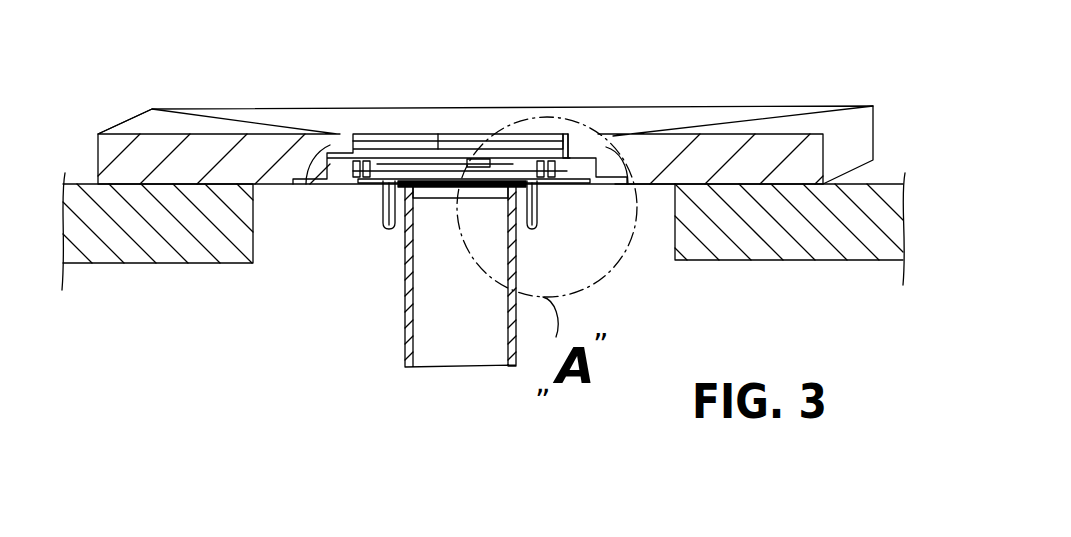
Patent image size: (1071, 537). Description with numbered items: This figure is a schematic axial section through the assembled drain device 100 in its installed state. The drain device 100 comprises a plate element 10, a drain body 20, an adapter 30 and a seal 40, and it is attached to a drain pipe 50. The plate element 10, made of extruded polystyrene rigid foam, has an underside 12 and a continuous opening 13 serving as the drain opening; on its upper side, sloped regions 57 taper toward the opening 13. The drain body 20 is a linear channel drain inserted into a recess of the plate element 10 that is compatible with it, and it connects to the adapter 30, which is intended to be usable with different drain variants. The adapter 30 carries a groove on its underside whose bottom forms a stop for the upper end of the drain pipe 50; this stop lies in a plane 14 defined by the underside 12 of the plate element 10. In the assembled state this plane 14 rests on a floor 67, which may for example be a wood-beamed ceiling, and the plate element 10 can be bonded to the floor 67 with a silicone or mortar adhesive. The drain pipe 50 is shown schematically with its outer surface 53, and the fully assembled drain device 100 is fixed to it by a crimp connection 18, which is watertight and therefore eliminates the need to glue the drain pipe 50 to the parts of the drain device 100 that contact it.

The drain device 100 is at (668, 94).
The plate element 10 is at (231, 112).
The underside 12 is at (177, 187).
The plane 14 is at (660, 187).
The floor 67 is at (784, 233).
The sloped regions 57 is at (382, 127).
The opening 13 is at (466, 133).
The drain body 20 is at (565, 119).
The adapter 30 is at (383, 194).
The crimp connection 18 is at (546, 204).
The seal 40 is at (404, 229).
The drain pipe 50 is at (413, 344).
The outer surface 53 is at (403, 289).